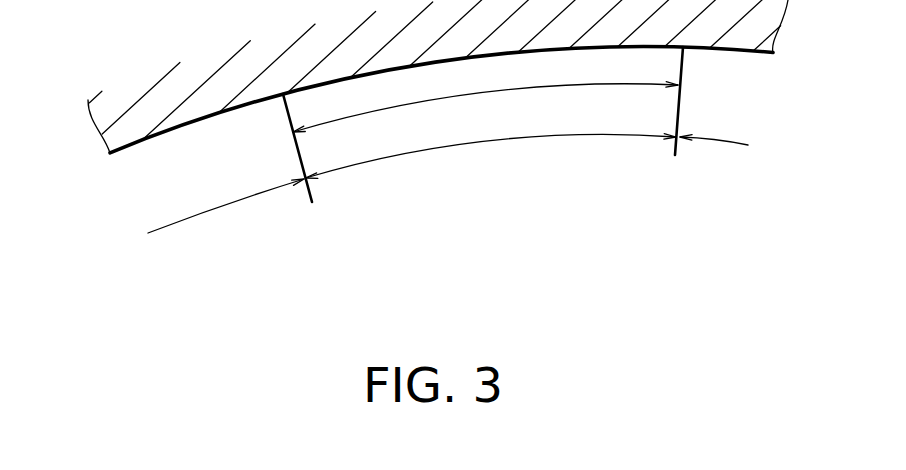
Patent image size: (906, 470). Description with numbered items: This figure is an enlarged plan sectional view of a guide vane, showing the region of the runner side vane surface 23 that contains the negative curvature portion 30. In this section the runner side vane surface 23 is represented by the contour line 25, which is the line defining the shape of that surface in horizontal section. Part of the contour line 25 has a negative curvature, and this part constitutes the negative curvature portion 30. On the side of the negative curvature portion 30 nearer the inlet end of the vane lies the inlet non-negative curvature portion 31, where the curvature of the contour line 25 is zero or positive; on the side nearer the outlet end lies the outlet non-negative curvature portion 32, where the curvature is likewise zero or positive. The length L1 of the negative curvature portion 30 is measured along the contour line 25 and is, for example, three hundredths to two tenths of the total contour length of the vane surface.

The runner side vane surface 23 is at (370, 81).
The contour line 25 is at (602, 48).
The negative curvature portion 30 is at (433, 152).
The inlet non-negative curvature portion 31 is at (242, 204).
The outlet non-negative curvature portion 32 is at (735, 144).
The length of the negative curvature portion L1 is at (493, 93).